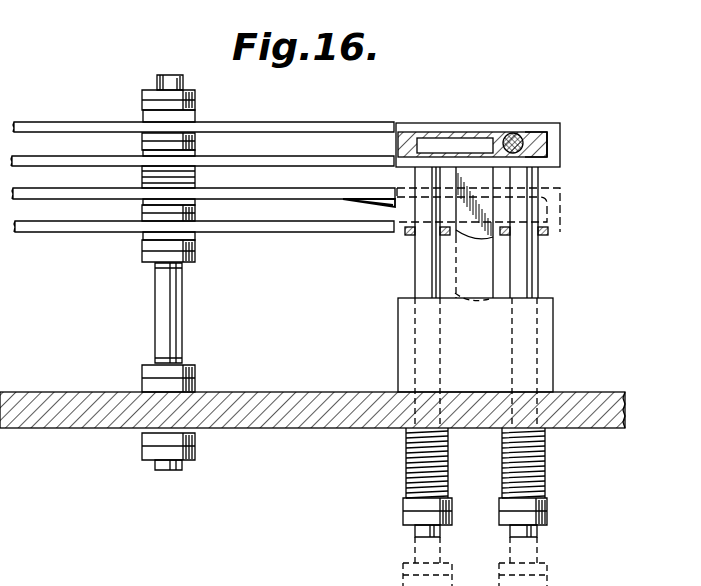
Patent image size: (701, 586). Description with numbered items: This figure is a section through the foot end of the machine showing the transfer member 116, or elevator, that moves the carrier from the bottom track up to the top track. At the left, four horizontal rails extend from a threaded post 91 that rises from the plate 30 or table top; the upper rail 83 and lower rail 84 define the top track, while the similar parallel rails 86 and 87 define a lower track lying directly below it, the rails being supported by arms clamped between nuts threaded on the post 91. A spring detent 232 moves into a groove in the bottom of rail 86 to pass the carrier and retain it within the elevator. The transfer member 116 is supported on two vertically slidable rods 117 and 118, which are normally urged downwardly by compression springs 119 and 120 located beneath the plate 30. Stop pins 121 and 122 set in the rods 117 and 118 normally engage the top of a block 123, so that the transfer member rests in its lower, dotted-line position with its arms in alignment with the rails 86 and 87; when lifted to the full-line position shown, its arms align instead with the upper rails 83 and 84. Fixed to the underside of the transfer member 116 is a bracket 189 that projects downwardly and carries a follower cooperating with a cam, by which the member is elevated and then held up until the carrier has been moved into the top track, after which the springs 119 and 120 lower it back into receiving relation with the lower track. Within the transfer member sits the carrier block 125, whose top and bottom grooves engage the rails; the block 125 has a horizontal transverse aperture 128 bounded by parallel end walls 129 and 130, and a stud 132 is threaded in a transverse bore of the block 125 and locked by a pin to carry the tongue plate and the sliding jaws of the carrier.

The upper rail 83 is at (274, 122).
The lower rail 84 is at (314, 156).
The rail 86 is at (248, 188).
The rail 87 is at (261, 221).
The spring detent 232 is at (348, 202).
The post 91 is at (183, 322).
The plate 30 is at (248, 392).
The transfer member 116 is at (560, 143).
The horizontal transverse aperture 128 is at (447, 142).
The end wall 129 is at (440, 136).
The end wall 130 is at (483, 134).
The stud 132 is at (534, 131).
The block 125 is at (546, 135).
The bracket 189 is at (485, 181).
The stop pin 121 is at (407, 233).
The stop pin 122 is at (546, 233).
The vertically slidable rod 117 is at (415, 272).
The vertically slidable rod 118 is at (538, 270).
The block 123 is at (553, 328).
The compression spring 119 is at (408, 453).
The compression spring 120 is at (545, 456).